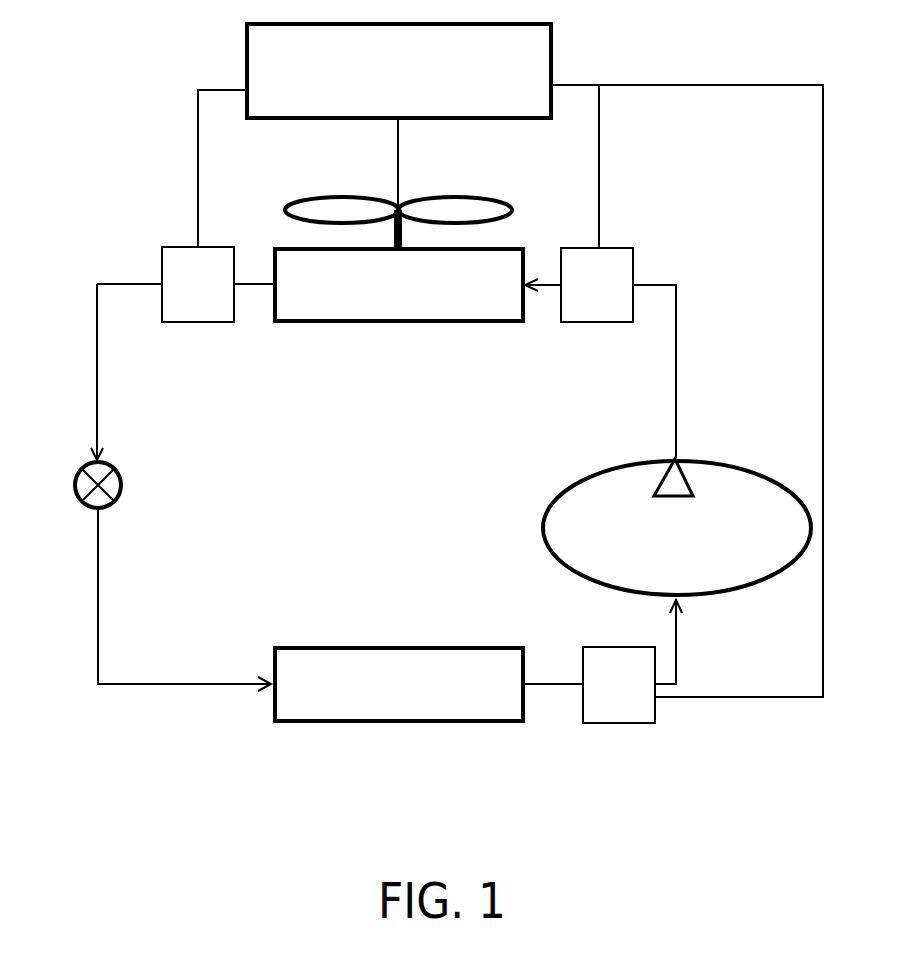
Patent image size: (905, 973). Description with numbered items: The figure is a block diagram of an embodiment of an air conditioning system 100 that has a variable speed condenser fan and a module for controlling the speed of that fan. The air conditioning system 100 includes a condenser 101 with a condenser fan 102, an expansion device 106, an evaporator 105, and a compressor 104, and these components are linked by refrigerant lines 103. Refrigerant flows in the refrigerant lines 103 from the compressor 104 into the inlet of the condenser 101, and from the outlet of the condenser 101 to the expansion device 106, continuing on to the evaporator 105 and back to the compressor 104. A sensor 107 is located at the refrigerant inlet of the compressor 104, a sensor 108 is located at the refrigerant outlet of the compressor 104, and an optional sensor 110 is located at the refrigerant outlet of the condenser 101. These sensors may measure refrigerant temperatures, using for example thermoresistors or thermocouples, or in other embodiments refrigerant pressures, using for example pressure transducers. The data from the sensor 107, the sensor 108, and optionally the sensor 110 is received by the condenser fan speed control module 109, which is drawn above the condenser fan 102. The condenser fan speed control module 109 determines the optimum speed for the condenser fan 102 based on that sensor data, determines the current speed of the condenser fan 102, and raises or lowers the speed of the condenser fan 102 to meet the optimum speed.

The air conditioning system 100 is at (162, 111).
The condenser 101 is at (415, 310).
The condenser fan 102 is at (498, 185).
The refrigerant lines 103 is at (89, 274).
The compressor 104 is at (658, 553).
The evaporator 105 is at (382, 710).
The expansion device 106 is at (70, 456).
The sensor 107 is at (603, 695).
The sensor 108 is at (580, 297).
The condenser fan speed control module 109 is at (382, 108).
The sensor 110 is at (180, 296).